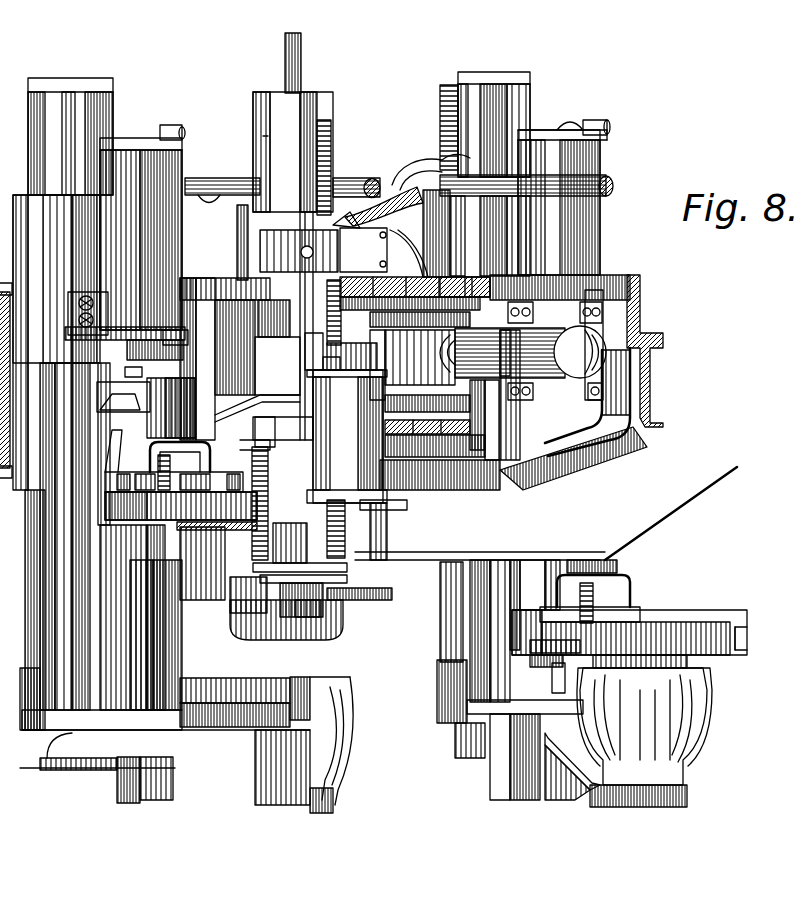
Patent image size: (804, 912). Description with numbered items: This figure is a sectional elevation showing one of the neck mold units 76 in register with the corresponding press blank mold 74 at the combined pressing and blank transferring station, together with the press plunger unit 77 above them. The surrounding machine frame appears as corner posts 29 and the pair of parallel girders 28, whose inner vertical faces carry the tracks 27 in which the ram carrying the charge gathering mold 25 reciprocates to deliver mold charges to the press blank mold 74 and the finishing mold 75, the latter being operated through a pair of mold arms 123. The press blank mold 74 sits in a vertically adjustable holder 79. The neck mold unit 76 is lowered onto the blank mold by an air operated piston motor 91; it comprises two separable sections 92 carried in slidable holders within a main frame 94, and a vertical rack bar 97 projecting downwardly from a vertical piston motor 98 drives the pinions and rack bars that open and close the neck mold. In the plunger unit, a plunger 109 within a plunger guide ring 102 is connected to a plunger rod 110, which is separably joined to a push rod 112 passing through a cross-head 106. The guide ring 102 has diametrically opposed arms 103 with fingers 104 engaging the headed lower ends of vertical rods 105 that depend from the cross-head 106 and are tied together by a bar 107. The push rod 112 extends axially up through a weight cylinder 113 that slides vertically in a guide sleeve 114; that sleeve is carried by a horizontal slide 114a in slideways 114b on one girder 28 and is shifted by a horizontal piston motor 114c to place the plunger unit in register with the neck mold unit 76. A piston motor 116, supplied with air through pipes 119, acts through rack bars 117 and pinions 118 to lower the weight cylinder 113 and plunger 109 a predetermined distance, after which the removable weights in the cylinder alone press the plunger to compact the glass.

The corner posts 29 is at (47, 97).
The air operated piston motor 91 is at (120, 160).
The push rod 112 is at (292, 68).
The press plunger unit 77 is at (350, 91).
The weight cylinder 113 is at (263, 136).
The rack bars 117 is at (326, 141).
The pinions 118 is at (337, 222).
The guide sleeve 114 is at (250, 280).
The horizontal slide 114a is at (460, 325).
The slideways 114b is at (453, 400).
The horizontal piston motor 114c is at (572, 355).
The tracks 27 is at (645, 330).
The girders 28 is at (662, 382).
The vertical piston motor 98 is at (155, 413).
The vertical rack bar 97 is at (180, 466).
The cross-head 106 is at (265, 446).
The plunger rod 110 is at (303, 482).
The piston motor 116 is at (347, 423).
The neck mold unit 76 is at (727, 610).
The pipes 119 is at (402, 506).
The vertical rods 105 is at (348, 528).
The plunger guide ring 102 is at (290, 543).
The bar 107 is at (350, 566).
The fingers 104 is at (248, 595).
The arms 103 is at (285, 580).
The plunger 109 is at (305, 612).
The charge gathering mold 25 is at (340, 622).
The finishing mold 75 is at (205, 693).
The press blank mold 74 is at (340, 724).
The mold arms 123 is at (123, 768).
The main frame 94 is at (723, 650).
The separable sections 92 is at (690, 662).
The vertically adjustable holder 79 is at (2, 345).